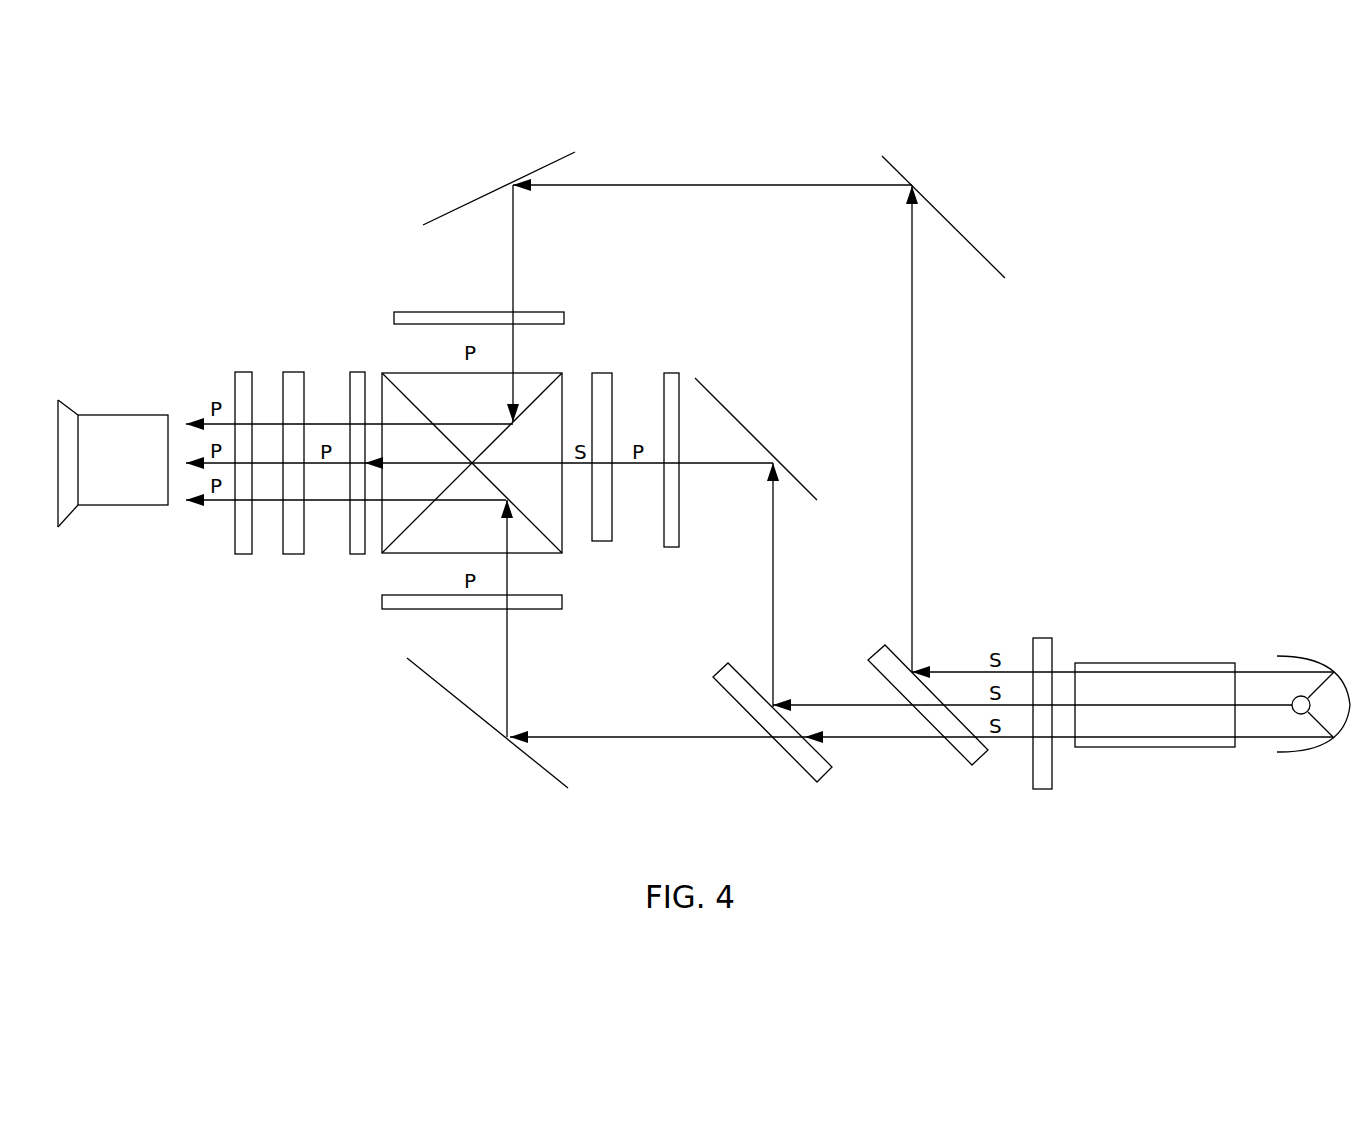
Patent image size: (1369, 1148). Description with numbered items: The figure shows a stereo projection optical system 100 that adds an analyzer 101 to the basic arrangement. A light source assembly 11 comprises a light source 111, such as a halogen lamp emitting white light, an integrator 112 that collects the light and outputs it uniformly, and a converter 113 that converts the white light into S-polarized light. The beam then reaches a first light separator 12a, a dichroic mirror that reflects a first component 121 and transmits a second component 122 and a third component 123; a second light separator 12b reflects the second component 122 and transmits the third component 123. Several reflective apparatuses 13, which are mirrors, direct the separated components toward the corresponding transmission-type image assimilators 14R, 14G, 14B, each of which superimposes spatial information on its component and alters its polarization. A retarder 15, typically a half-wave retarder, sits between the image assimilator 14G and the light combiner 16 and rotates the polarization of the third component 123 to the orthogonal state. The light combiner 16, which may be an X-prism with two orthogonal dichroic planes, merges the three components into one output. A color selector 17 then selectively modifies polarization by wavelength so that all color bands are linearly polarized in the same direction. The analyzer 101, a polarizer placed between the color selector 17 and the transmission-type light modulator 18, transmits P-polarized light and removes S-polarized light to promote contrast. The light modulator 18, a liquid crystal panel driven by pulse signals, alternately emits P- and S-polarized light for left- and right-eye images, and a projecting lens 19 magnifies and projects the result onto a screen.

The stereo projection optical system 100 is at (657, 88).
The light source assembly 11 is at (1337, 572).
The light source 111 is at (1302, 655).
The integrator 112 is at (1155, 668).
The converter 113 is at (1045, 645).
The first light separator 12a is at (968, 762).
The second light separator 12b is at (815, 770).
The reflective apparatus 13 is at (508, 190).
The first component 121 is at (612, 184).
The second component 122 is at (578, 740).
The third component 123 is at (777, 548).
The image assimilator 14B is at (530, 318).
The image assimilator 14G is at (672, 378).
The image assimilator 14R is at (388, 600).
The retarder 15 is at (602, 378).
The light combiner 16 is at (503, 383).
The color selector 17 is at (362, 372).
The analyzer 101 is at (292, 545).
The transmission-type light modulator 18 is at (245, 388).
The projecting lens 19 is at (110, 395).